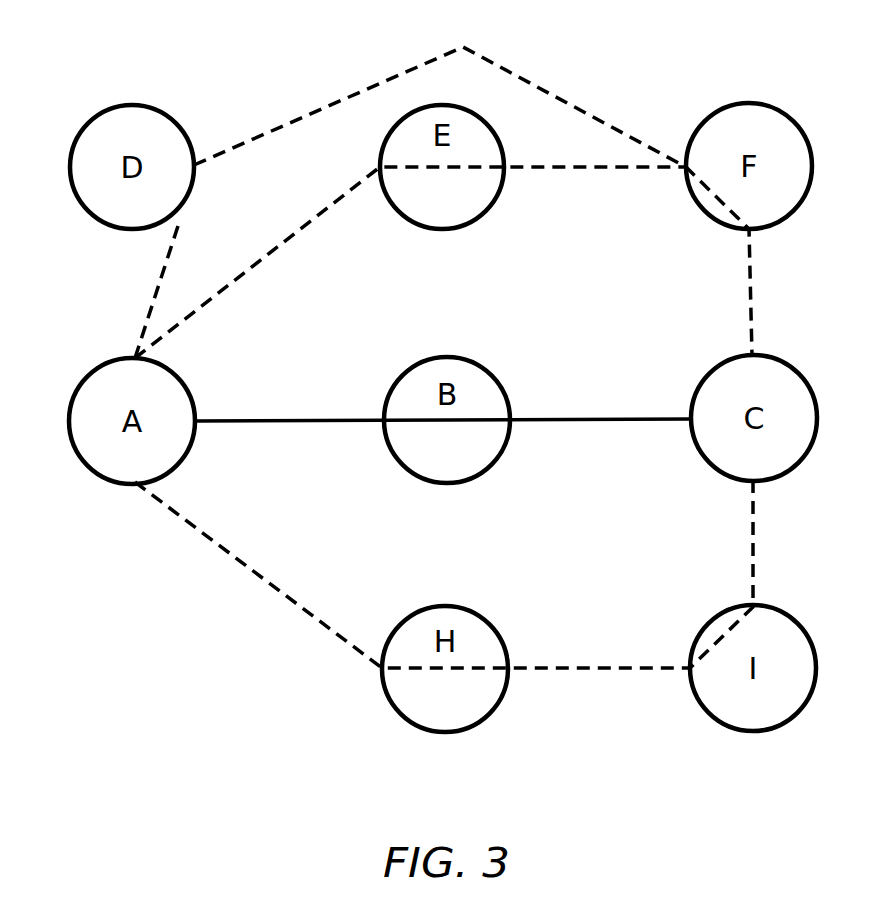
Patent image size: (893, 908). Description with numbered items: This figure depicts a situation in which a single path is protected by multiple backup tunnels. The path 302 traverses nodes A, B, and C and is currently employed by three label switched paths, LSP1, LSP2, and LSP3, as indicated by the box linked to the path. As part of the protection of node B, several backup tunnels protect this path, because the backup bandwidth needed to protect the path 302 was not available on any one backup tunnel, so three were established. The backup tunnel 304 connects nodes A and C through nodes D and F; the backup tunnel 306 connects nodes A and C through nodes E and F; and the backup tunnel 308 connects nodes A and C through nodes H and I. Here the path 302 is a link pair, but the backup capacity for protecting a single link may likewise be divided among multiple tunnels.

The path 302 is at (321, 421).
The backup tunnel 304 is at (420, 187).
The backup tunnel 306 is at (410, 262).
The backup tunnel 308 is at (444, 574).